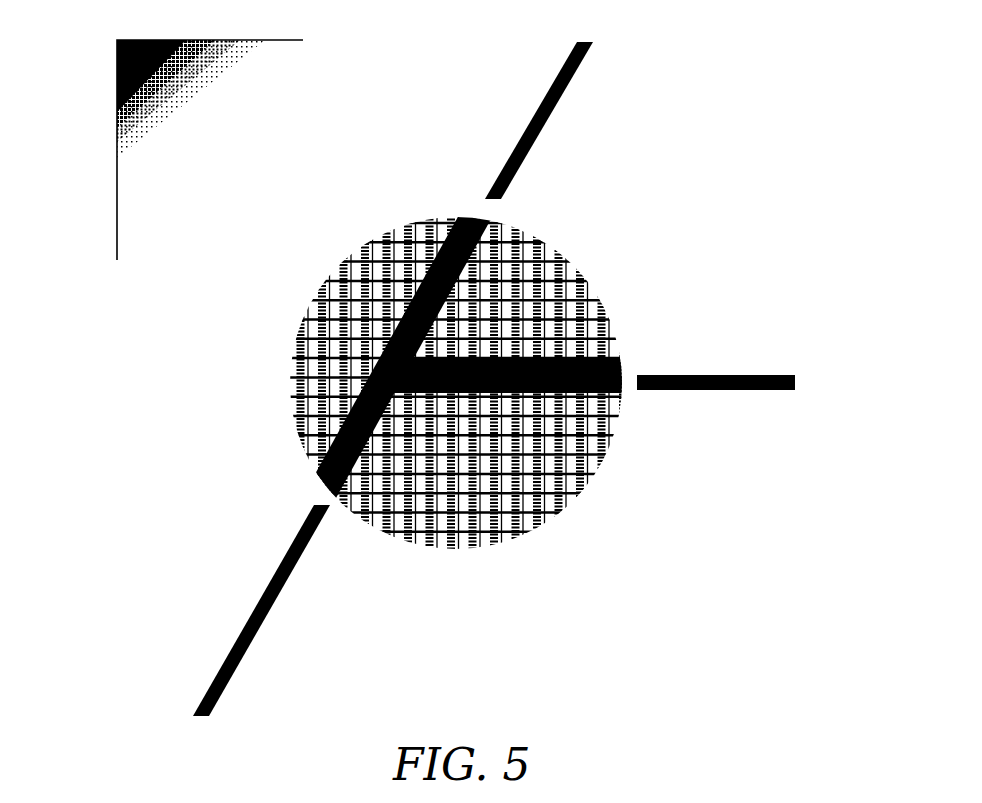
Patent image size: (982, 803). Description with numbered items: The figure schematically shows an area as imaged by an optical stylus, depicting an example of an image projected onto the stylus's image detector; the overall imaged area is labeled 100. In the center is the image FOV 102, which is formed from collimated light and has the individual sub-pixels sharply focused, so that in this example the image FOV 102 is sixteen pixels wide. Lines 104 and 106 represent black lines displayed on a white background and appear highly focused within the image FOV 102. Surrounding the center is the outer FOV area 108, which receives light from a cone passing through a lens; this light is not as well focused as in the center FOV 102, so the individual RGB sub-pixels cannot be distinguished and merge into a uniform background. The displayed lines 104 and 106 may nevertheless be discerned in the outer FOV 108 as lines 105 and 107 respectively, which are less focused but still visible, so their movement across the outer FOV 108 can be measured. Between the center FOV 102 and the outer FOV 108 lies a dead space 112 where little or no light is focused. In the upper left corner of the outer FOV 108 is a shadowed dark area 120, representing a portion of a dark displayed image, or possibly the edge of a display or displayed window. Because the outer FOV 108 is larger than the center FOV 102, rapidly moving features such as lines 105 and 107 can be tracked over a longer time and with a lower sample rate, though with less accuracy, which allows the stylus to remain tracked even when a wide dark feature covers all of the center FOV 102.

The image frame 100 is at (243, 25).
The image FOV 102 is at (572, 307).
The line 104 is at (372, 428).
The line 105 is at (572, 93).
The line 106 is at (453, 400).
The line 107 is at (725, 403).
The outer FOV area 108 is at (720, 575).
The dead space 112 is at (627, 373).
The dark area 120 is at (143, 63).